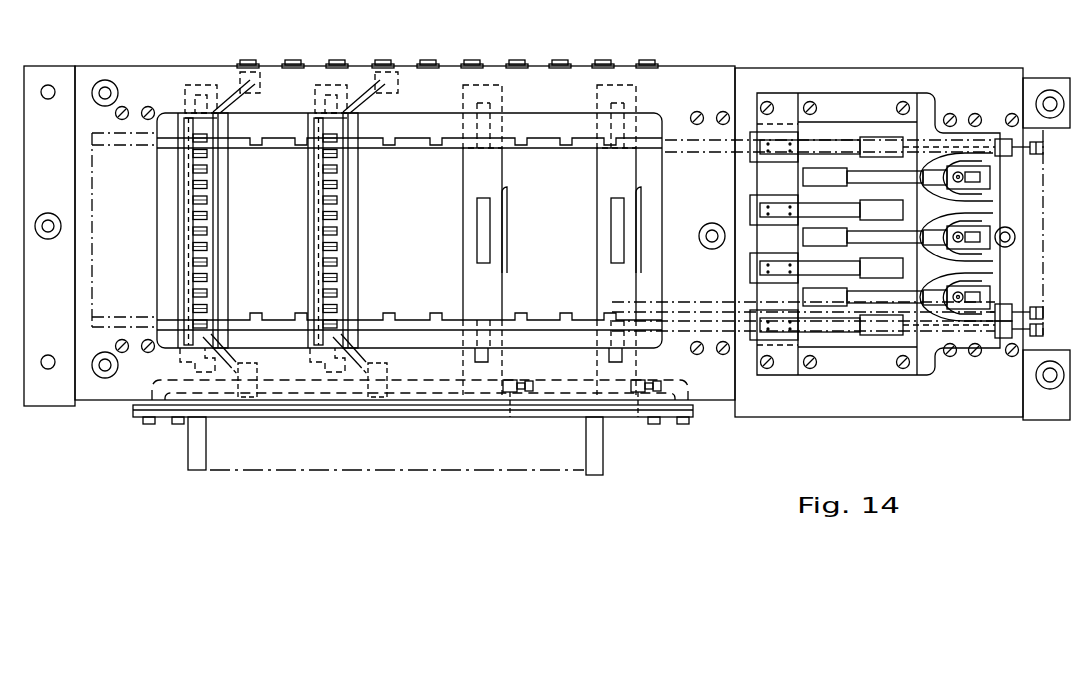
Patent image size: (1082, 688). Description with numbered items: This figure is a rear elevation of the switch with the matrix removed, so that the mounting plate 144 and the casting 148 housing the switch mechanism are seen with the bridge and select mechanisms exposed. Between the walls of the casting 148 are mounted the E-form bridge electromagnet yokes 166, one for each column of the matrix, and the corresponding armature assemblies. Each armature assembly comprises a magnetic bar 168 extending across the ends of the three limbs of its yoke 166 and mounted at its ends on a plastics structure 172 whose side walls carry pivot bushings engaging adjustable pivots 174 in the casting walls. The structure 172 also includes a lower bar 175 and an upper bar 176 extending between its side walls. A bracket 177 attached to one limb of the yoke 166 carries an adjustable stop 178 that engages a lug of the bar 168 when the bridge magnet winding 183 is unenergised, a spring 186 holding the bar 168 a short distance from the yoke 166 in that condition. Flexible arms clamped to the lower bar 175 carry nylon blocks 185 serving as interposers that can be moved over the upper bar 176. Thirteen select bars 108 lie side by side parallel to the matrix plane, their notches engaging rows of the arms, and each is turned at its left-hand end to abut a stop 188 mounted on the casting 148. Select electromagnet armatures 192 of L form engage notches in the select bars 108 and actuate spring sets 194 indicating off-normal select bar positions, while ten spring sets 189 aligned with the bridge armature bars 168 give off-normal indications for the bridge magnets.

The select bar 108 is at (415, 140).
The plate 144 is at (125, 70).
The casting 148 is at (762, 70).
The bridge electromagnet yoke 166 is at (617, 233).
The magnetic bar 168 is at (222, 207).
The plastics structure 172 is at (208, 333).
The adjustable pivot 174 is at (293, 62).
The bar 175 is at (180, 355).
The bar 176 is at (182, 168).
The bracket 177 is at (510, 417).
The adjustable stop 178 is at (522, 383).
The bridge magnet winding 183 is at (508, 200).
The nylon block 185 is at (190, 220).
The spring 186 is at (402, 78).
The stop 188 is at (1040, 328).
The spring set 189 is at (378, 471).
The armature 192 is at (967, 230).
The spring set 194 is at (878, 177).